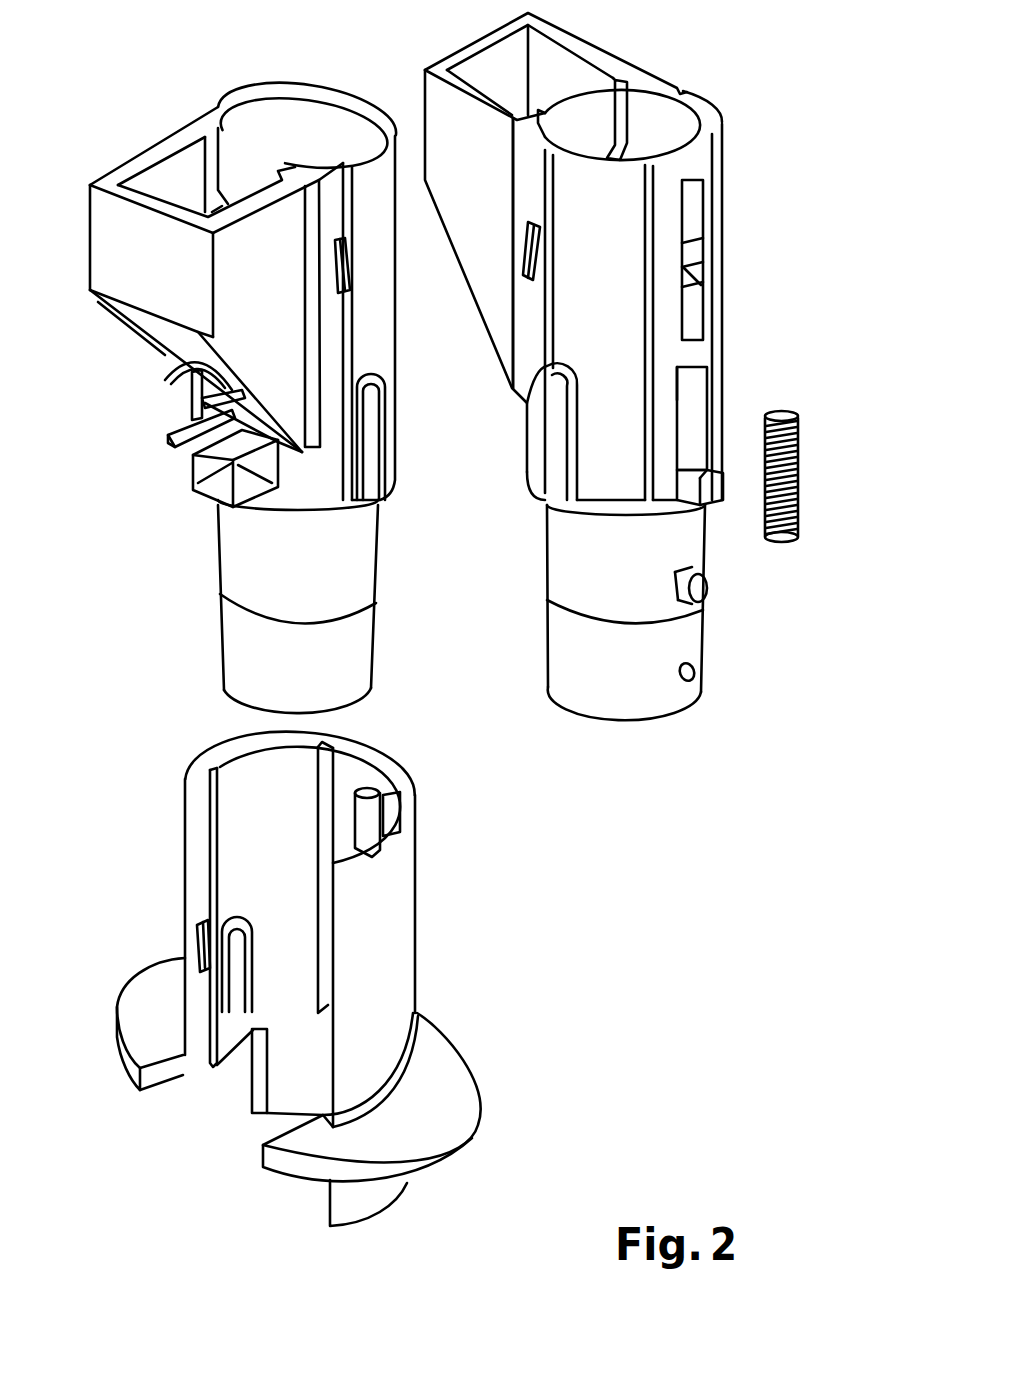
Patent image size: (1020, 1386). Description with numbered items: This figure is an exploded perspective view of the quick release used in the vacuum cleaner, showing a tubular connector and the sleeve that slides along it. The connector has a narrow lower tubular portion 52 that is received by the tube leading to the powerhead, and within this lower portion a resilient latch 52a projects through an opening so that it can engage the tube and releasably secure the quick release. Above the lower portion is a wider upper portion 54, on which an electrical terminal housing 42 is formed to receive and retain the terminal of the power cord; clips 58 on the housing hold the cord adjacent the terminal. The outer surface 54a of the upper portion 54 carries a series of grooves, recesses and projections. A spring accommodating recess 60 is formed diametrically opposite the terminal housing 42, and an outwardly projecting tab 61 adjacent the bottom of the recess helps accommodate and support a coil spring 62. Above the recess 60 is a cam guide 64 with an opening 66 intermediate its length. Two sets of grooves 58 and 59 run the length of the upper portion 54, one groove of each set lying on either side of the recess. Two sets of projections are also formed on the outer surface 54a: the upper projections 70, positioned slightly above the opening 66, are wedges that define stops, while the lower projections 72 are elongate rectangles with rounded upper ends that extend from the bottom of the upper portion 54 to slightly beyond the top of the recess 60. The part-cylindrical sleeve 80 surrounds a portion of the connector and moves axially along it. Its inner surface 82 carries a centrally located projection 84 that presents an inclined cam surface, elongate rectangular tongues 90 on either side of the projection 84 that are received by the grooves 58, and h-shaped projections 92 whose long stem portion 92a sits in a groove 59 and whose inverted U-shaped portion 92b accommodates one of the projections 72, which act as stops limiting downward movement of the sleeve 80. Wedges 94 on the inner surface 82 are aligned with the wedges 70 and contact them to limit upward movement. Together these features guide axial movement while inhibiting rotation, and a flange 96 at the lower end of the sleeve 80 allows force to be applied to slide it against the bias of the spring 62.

The electrical terminal housing 42 is at (140, 284).
The lower tubular portion 52 is at (237, 578).
The resilient latch 52a is at (708, 590).
The upper portion 54 is at (749, 178).
The outer surface 54a is at (603, 490).
The grooves 58 is at (313, 88).
The grooves 59 is at (212, 108).
The spring accommodating recess 60 is at (683, 397).
The outwardly projecting tab 61 is at (705, 490).
The coil spring 62 is at (782, 540).
The cam guide 64 is at (687, 248).
The opening 66 is at (700, 281).
The upper projections 70 is at (335, 272).
The lower projections 72 is at (373, 434).
The part-cylindrical sleeve 80 is at (492, 1001).
The inner surface 82 is at (365, 768).
The projection 84 is at (365, 825).
The tongues 90 is at (320, 847).
The projections 92 is at (227, 1072).
The long stem portion 92a is at (220, 813).
The inverted U-shaped portion 92b is at (255, 960).
The wedges 94 is at (198, 933).
The flange 96 is at (460, 1092).